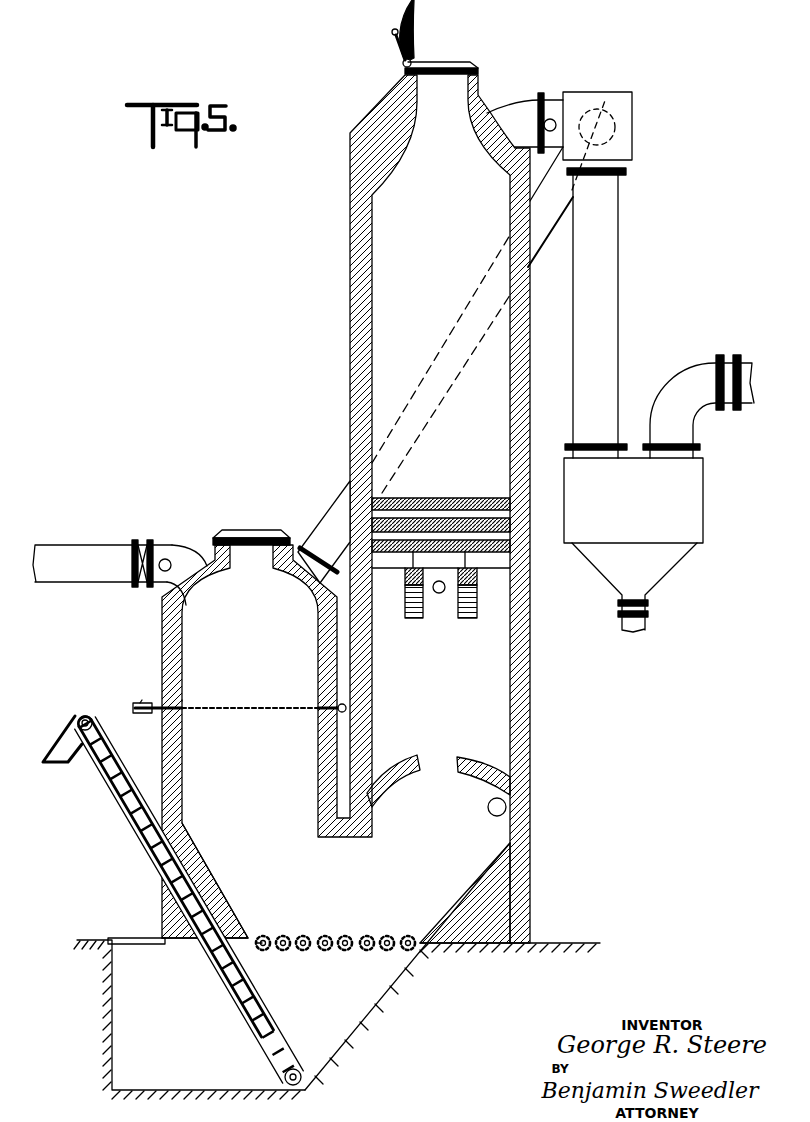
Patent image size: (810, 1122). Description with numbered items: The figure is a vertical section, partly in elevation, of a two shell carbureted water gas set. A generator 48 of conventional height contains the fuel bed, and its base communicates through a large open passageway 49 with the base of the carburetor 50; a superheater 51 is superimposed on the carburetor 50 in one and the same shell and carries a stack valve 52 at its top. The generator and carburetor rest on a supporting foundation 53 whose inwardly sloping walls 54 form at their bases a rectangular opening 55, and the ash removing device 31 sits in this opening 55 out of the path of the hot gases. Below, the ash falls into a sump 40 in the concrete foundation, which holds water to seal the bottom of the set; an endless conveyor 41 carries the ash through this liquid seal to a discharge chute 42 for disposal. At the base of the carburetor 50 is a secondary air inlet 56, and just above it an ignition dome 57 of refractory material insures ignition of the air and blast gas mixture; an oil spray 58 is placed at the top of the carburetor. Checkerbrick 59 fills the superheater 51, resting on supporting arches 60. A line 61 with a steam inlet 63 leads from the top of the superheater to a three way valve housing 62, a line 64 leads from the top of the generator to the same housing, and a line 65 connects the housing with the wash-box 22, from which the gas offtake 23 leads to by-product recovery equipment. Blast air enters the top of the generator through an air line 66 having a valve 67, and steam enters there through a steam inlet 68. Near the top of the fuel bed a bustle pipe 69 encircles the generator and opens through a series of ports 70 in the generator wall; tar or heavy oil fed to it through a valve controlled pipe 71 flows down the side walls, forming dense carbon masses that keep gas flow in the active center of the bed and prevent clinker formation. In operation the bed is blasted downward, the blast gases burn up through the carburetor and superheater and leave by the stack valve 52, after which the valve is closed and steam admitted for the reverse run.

The wash-box 22 is at (695, 505).
The gas offtake 23 is at (693, 372).
The ash removing device 31 is at (305, 951).
The sump 40 is at (120, 1018).
The endless conveyor 41 is at (130, 838).
The discharge chute 42 is at (58, 768).
The generator 48 is at (162, 622).
The open passageway 49 is at (320, 886).
The carburetor 50 is at (497, 685).
The superheater 51 is at (372, 378).
The stack valve 52 is at (414, 22).
The supporting foundation 53 is at (517, 903).
The inwardly sloping walls 54 is at (480, 885).
The rectangular opening 55 is at (358, 935).
The secondary air inlet 56 is at (488, 808).
The ignition dome 57 is at (463, 755).
The oil spray 58 is at (438, 593).
The checkerbrick 59 is at (443, 527).
The supporting arches 60 is at (477, 597).
The line 61 is at (524, 108).
The three way valve housing 62 is at (603, 92).
The steam inlet 63 is at (551, 118).
The line 64 is at (342, 510).
The line 65 is at (618, 265).
The air line 66 is at (72, 552).
The valve 67 is at (140, 545).
The steam inlet 68 is at (170, 558).
The bustle pipe 69 is at (157, 714).
The ports 70 is at (225, 712).
The valve controlled pipe 71 is at (142, 700).